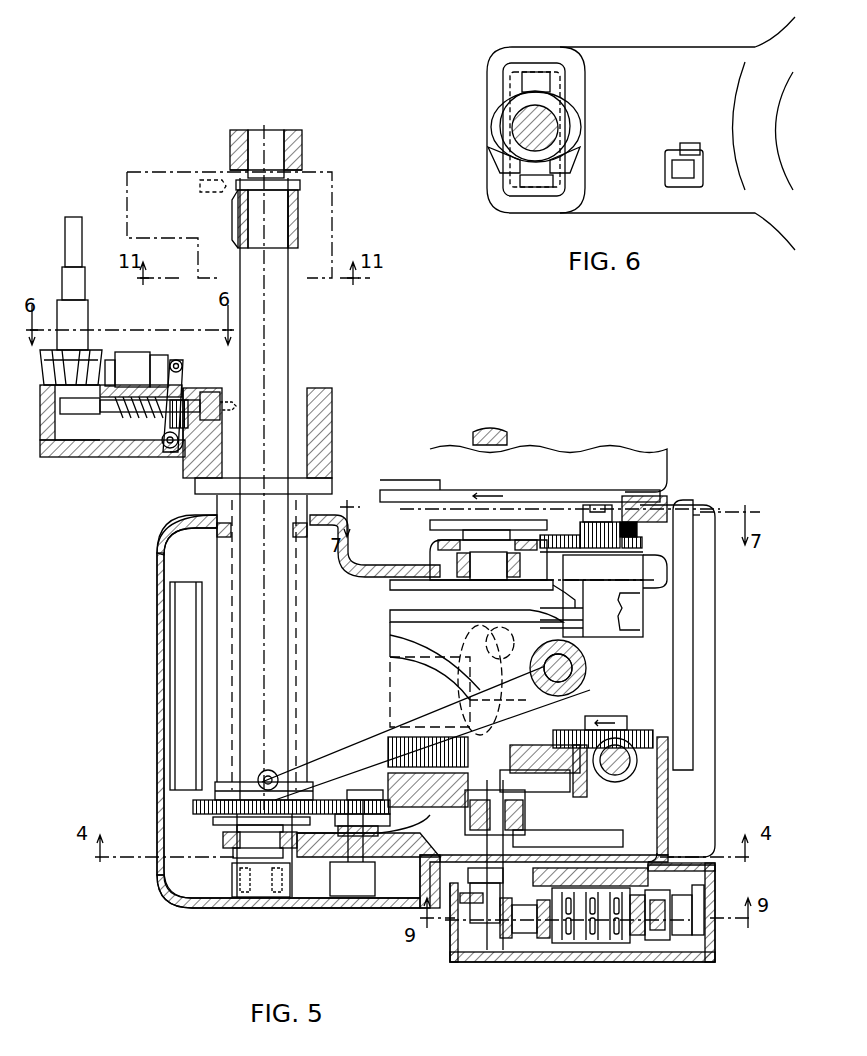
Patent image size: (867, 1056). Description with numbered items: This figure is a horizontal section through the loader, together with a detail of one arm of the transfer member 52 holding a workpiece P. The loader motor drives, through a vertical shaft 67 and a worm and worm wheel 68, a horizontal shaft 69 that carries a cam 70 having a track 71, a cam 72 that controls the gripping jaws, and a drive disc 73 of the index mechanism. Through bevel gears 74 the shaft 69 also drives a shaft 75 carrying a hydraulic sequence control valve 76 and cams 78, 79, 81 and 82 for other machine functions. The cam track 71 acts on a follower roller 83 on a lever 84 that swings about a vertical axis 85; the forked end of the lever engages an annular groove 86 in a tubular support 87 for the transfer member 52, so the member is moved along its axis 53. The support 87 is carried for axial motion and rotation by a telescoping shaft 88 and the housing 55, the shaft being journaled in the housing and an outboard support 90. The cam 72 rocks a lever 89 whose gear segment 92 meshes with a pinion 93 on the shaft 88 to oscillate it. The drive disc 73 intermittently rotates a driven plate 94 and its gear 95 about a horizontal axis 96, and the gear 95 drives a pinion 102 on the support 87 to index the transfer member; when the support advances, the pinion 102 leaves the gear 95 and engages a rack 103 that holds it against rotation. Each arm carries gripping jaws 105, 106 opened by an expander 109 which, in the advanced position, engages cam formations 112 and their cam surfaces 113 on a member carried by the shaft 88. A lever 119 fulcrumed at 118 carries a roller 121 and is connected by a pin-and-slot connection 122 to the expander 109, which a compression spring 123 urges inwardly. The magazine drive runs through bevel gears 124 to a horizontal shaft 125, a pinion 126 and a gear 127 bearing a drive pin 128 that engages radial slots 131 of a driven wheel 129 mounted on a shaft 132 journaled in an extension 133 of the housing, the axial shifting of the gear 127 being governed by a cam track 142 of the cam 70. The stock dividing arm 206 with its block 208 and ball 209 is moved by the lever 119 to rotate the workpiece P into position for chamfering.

In FIG. 5, the workpiece P is at (68, 318).
In FIG. 6, the workpiece P is at (515, 135).
In FIG. 5, the transfer member 52 is at (325, 408).
In FIG. 6, the transfer member 52 is at (641, 133).
In FIG. 5, the axis 53 is at (289, 330).
In FIG. 5, the housing 55 is at (157, 706).
In FIG. 5, the vertical shaft 67 is at (625, 775).
In FIG. 5, the worm and worm wheel 68 is at (578, 770).
In FIG. 5, the horizontal shaft 69 is at (478, 625).
In FIG. 5, the cam 70 is at (400, 683).
In FIG. 5, the track 71 is at (398, 647).
In FIG. 5, the cam 72 is at (400, 772).
In FIG. 5, the drive disc 73 is at (577, 843).
In FIG. 5, the bevel gears 74 is at (505, 935).
In FIG. 5, the shaft 75 is at (545, 940).
In FIG. 5, the hydraulic sequence control valve 76 is at (603, 940).
In FIG. 5, the cam 78 is at (642, 940).
In FIG. 5, the cam 79 is at (665, 940).
In FIG. 5, the cam 81 is at (695, 945).
In FIG. 5, the cam 82 is at (705, 935).
In FIG. 5, the follower roller 83 is at (472, 706).
In FIG. 5, the lever 84 is at (400, 716).
In FIG. 5, the vertical axis 85 is at (548, 660).
In FIG. 5, the annular groove 86 is at (225, 784).
In FIG. 5, the tubular support 87 is at (225, 572).
In FIG. 5, the telescoping shaft 88 is at (289, 366).
In FIG. 5, the lever 89 is at (530, 815).
In FIG. 5, the outboard support 90 is at (302, 134).
In FIG. 5, the gear segment 92 is at (305, 897).
In FIG. 5, the pinion 93 is at (223, 838).
In FIG. 5, the driven plate 94 is at (330, 822).
In FIG. 5, the gear 95 is at (357, 800).
In FIG. 5, the horizontal axis 96 is at (355, 896).
In FIG. 5, the pinion 102 is at (195, 805).
In FIG. 5, the rack 103 is at (180, 762).
In FIG. 6, the work gripping jaw 105 is at (515, 185).
In FIG. 6, the work gripping jaw 106 is at (548, 78).
In FIG. 5, the expander 109 is at (204, 180).
In FIG. 5, the cam formations 112 is at (236, 212).
In FIG. 5, the cam surfaces 113 is at (232, 236).
In FIG. 5, the fulcrum 118 is at (172, 450).
In FIG. 5, the lever 119 is at (170, 430).
In FIG. 6, the lever 119 is at (677, 165).
In FIG. 5, the roller 121 is at (182, 360).
In FIG. 6, the roller 121 is at (692, 143).
In FIG. 5, the pin-and-slot connection 122 is at (185, 384).
In FIG. 5, the compression spring 123 is at (100, 414).
In FIG. 5, the bevel gears 124 is at (680, 732).
In FIG. 5, the horizontal shaft 125 is at (680, 647).
In FIG. 5, the pinion 126 is at (587, 530).
In FIG. 5, the gear 127 is at (560, 530).
In FIG. 5, the drive pin 128 is at (660, 510).
In FIG. 5, the driven wheel 129 is at (605, 500).
In FIG. 5, the radial slots 131 is at (560, 490).
In FIG. 5, the shaft 132 is at (480, 432).
In FIG. 5, the extension 133 is at (657, 440).
In FIG. 5, the cam track 142 is at (395, 608).
In FIG. 5, the arm 206 is at (158, 365).
In FIG. 5, the block 208 is at (130, 360).
In FIG. 5, the ball 209 is at (110, 360).